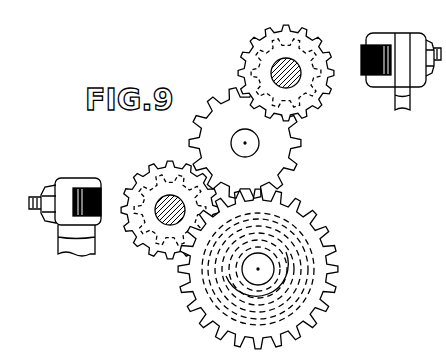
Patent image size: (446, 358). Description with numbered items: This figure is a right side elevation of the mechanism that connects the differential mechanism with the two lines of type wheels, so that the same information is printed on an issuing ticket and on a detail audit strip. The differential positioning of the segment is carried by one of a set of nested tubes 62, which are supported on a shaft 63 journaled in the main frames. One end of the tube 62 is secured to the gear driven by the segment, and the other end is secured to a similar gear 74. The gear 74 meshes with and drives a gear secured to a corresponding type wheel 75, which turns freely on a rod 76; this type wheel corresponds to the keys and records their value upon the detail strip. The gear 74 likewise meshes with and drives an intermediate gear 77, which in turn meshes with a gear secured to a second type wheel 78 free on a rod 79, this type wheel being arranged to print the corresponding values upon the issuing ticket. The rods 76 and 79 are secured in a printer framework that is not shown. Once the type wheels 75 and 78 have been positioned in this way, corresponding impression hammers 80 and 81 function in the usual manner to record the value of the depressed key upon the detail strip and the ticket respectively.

The tube 62 is at (312, 262).
The shaft 63 is at (263, 263).
The gear 74 is at (182, 290).
The type wheel 75 is at (151, 250).
The rod 76 is at (172, 200).
The intermediate gear 77 is at (284, 159).
The type wheel 78 is at (260, 49).
The rod 79 is at (291, 62).
The impression hammer 80 is at (73, 182).
The impression hammer 81 is at (411, 92).